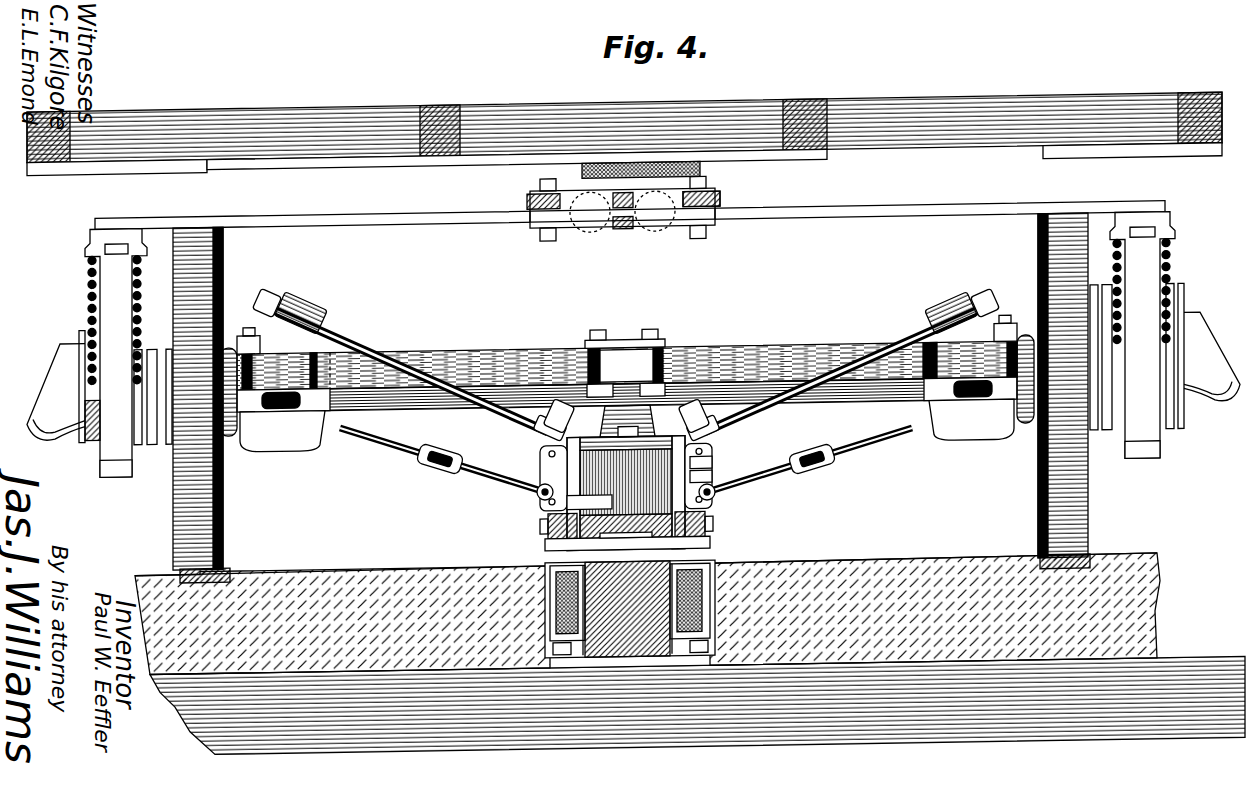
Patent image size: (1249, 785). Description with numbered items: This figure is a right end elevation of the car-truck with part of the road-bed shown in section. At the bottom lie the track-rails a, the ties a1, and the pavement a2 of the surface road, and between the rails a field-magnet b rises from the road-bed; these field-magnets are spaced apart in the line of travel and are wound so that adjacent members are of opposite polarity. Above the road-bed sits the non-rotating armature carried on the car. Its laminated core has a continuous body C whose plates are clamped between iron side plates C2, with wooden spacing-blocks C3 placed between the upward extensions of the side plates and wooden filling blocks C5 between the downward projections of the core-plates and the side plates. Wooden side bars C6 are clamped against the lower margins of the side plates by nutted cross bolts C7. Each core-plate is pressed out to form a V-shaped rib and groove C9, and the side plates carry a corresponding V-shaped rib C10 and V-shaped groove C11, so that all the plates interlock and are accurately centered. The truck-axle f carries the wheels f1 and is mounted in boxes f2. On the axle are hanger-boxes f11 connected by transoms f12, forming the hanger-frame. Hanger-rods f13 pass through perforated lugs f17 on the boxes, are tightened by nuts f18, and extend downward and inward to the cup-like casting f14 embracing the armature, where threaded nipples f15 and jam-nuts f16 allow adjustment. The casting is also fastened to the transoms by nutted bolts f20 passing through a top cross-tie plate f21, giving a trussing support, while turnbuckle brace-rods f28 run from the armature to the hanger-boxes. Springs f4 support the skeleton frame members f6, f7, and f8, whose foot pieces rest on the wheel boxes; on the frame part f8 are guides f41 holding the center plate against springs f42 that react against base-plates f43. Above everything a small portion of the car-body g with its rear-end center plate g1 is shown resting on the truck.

The car-body g is at (752, 120).
The rear-end center plate g1 is at (527, 196).
The springs f4 is at (90, 262).
The guides f41 is at (718, 200).
The springs f42 is at (655, 222).
The back-stops or base-plates f43 is at (590, 222).
The skeleton frame member f8 is at (915, 203).
The skeleton frame member f6 is at (115, 300).
The skeleton frame member f7 is at (114, 478).
The boxes f2 is at (75, 440).
The wheels f1 is at (188, 475).
The nuts f18 is at (270, 310).
The perforated lugs f17 is at (300, 320).
The hanger-rods f13 is at (408, 368).
The transoms f12 is at (477, 362).
The nutted bolts f20 is at (650, 330).
The top cross-tie plate f21 is at (630, 346).
The boxes f11 is at (292, 420).
The nipples f15 is at (558, 408).
The cap or cup-like casting f14 is at (628, 430).
The truck-axles f is at (470, 416).
The jam-nuts f16 is at (538, 432).
The turnbuckle brace-rods f28 is at (446, 470).
The core body C is at (578, 531).
The side plates C2 is at (546, 466).
The spacing-blocks C3 is at (625, 430).
The filling strips or blocks C5 is at (626, 546).
The side bars C6 is at (545, 554).
The cross rods or bolts C7 is at (546, 537).
The V-shaped rib and groove C9 is at (714, 470).
The V-shaped rib C10 is at (714, 485).
The V-shaped groove C11 is at (570, 514).
The field-magnets b is at (712, 543).
The track-rails a is at (170, 573).
The ties a1 is at (404, 722).
The pavement a2 is at (138, 574).